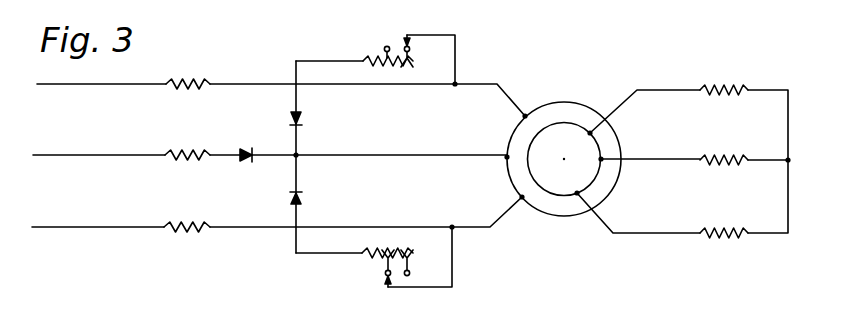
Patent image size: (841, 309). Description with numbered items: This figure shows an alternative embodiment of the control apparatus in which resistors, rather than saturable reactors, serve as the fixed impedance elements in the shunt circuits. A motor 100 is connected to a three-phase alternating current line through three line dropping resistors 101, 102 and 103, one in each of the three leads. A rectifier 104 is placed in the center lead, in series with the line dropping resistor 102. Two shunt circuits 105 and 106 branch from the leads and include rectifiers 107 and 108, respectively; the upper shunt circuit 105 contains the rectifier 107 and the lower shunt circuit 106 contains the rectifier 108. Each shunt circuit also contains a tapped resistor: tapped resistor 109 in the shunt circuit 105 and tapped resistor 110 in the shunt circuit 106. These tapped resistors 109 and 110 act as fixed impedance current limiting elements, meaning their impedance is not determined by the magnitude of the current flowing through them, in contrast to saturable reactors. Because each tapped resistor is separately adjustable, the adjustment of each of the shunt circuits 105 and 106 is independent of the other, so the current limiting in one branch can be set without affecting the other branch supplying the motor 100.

The motor 100 is at (585, 93).
The line dropping resistor 101 is at (191, 79).
The line dropping resistor 102 is at (195, 139).
The line dropping resistor 103 is at (195, 212).
The rectifier 104 is at (244, 151).
The shunt circuit 105 is at (332, 62).
The shunt circuit 106 is at (330, 256).
The rectifier 107 is at (304, 117).
The rectifier 108 is at (304, 198).
The tapped resistor 109 is at (402, 67).
The tapped resistor 110 is at (417, 222).